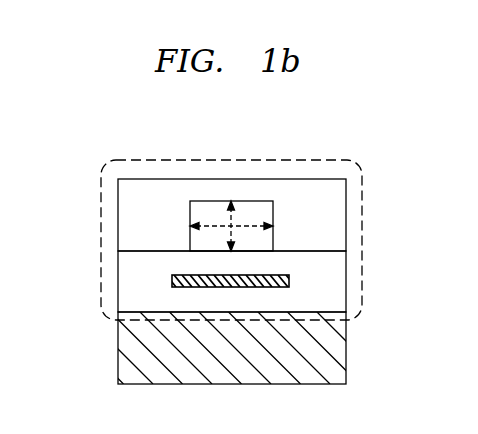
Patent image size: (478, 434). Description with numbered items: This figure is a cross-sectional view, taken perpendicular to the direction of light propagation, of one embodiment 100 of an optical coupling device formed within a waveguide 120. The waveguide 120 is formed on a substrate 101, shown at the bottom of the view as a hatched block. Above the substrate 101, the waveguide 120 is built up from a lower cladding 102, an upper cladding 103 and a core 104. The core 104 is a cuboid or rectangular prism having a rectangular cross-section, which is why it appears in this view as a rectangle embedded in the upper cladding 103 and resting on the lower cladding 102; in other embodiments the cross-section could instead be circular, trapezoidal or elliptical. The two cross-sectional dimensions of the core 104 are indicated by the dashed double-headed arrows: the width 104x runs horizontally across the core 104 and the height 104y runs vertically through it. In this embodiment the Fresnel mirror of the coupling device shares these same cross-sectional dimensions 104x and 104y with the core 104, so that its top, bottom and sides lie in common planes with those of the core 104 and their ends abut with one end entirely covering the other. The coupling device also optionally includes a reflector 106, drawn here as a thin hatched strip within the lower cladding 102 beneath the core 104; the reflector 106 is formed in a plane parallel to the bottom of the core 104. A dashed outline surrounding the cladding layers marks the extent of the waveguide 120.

The embodiment 100 is at (240, 100).
The substrate 101 is at (140, 353).
The lower cladding 102 is at (328, 299).
The upper cladding 103 is at (315, 190).
The core 104 is at (198, 201).
The cross-sectional dimension 104x is at (217, 222).
The cross-sectional dimension 104y is at (275, 222).
The reflector 106 is at (290, 282).
The waveguide 120 is at (363, 181).